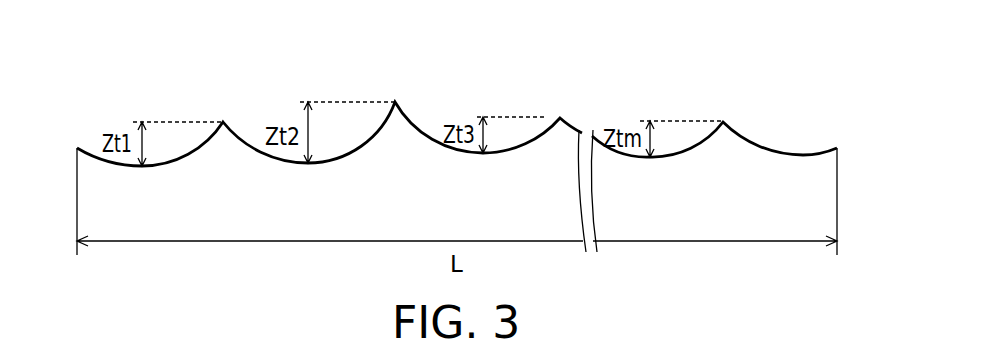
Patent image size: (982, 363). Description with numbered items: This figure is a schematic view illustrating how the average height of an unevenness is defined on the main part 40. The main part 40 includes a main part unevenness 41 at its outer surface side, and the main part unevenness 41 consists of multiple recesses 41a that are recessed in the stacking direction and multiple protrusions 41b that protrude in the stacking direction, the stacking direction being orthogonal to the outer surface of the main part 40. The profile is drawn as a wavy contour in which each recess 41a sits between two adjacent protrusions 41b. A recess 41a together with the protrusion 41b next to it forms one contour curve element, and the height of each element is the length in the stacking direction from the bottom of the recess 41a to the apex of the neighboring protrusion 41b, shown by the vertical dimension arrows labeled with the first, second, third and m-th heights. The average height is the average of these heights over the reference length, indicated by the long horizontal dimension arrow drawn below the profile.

The main part 40 is at (483, 160).
The main part unevenness 41 is at (775, 148).
The recess 41a is at (168, 161).
The protrusion 41b is at (223, 121).